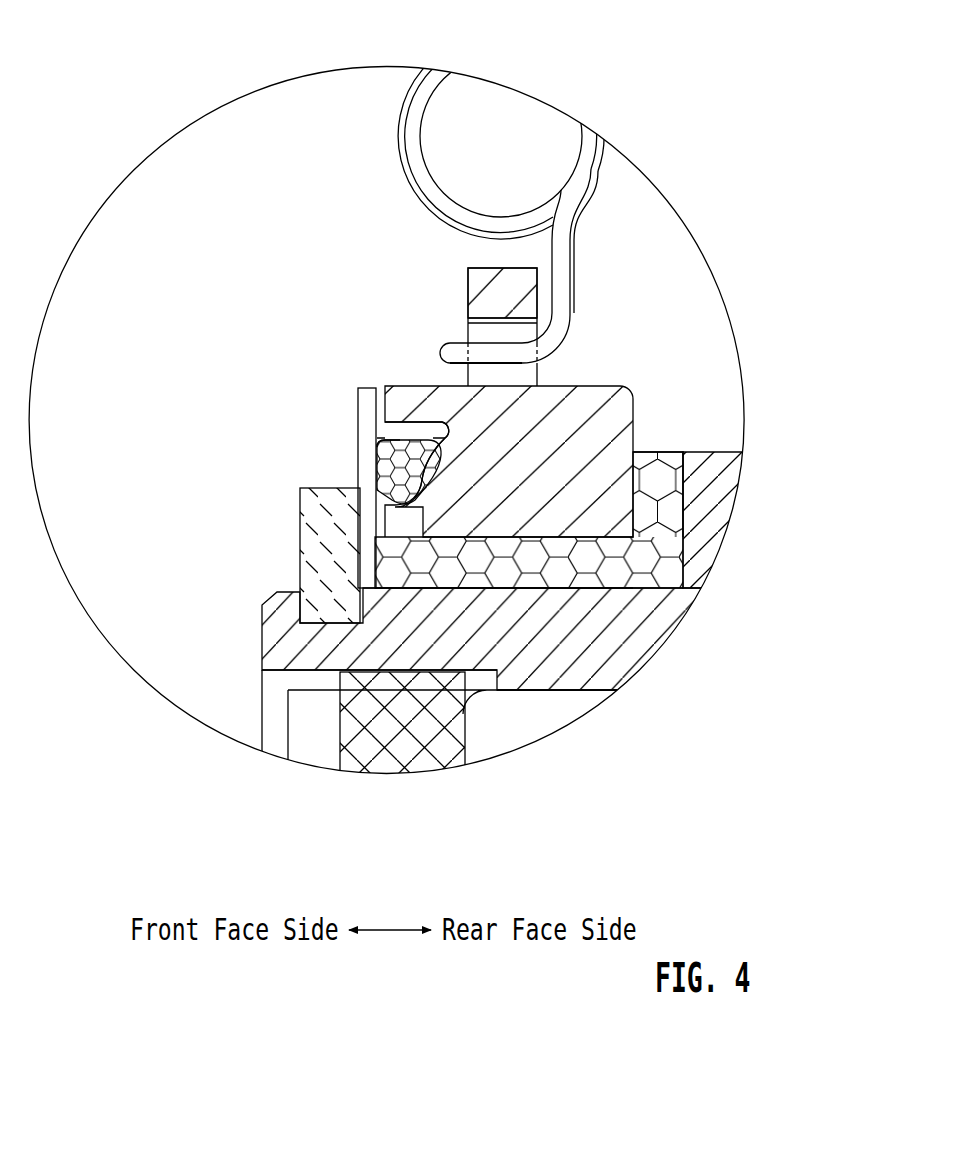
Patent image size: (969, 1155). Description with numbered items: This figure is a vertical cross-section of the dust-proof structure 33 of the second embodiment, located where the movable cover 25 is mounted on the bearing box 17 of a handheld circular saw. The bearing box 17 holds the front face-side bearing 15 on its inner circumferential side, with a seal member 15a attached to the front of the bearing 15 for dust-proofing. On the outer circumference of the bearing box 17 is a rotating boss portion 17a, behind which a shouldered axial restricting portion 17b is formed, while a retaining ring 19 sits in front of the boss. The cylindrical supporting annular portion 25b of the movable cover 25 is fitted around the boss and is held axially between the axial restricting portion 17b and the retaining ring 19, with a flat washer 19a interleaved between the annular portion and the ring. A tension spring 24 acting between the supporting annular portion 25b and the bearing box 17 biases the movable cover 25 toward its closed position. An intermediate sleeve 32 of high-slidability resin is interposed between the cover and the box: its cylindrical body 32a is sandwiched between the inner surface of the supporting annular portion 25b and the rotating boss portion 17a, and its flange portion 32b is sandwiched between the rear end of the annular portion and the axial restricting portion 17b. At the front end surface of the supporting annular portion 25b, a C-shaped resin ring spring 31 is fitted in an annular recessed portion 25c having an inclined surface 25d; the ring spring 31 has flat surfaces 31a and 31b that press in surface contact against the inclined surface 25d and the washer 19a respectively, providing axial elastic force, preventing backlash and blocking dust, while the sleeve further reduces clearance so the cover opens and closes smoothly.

The tension spring 24 is at (416, 112).
The movable cover 25 is at (490, 402).
The supporting annular portion 25b is at (465, 409).
The annular recessed portion 25c is at (426, 455).
The inclined surface 25d is at (452, 436).
The dust-proof structure 33 is at (331, 469).
The washer 19a is at (362, 415).
The ring spring 31 is at (331, 481).
The flat surface 31a is at (322, 508).
The flat surface 31b is at (378, 452).
The retaining ring 19 is at (308, 570).
The intermediate sleeve 32 is at (529, 589).
The cylindrical body 32a is at (454, 573).
The flange portion 32b is at (653, 477).
The bearing box 17 is at (480, 589).
The rotating boss portion 17a is at (520, 637).
The axial restricting portion 17b is at (707, 477).
The bearing 15 is at (439, 756).
The seal member 15a is at (397, 757).